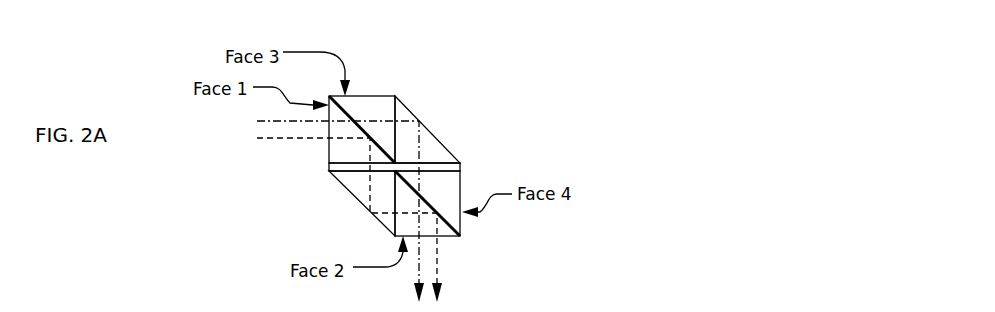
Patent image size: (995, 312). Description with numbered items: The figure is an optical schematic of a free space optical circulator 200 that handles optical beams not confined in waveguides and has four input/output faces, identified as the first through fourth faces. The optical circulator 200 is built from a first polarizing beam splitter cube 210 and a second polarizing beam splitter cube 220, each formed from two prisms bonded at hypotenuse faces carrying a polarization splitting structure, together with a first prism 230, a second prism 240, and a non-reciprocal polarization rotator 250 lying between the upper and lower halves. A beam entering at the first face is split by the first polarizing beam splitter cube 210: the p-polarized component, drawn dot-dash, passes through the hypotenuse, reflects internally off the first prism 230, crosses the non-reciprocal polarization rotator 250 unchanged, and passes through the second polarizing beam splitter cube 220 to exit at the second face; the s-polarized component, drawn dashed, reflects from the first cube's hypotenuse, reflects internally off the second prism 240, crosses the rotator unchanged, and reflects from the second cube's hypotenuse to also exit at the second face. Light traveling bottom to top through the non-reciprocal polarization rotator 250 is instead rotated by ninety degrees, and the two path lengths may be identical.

The optical circulator 200 is at (574, 54).
The first polarizing beam splitter cube 210 is at (381, 96).
The second polarizing beam splitter cube 220 is at (460, 236).
The first prism 230 is at (442, 142).
The second prism 240 is at (350, 191).
The non-reciprocal polarization rotator 250 is at (462, 168).